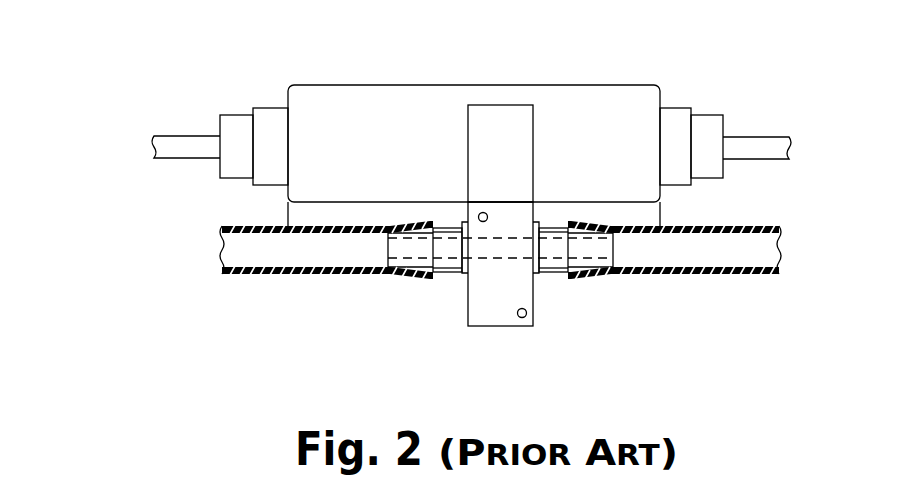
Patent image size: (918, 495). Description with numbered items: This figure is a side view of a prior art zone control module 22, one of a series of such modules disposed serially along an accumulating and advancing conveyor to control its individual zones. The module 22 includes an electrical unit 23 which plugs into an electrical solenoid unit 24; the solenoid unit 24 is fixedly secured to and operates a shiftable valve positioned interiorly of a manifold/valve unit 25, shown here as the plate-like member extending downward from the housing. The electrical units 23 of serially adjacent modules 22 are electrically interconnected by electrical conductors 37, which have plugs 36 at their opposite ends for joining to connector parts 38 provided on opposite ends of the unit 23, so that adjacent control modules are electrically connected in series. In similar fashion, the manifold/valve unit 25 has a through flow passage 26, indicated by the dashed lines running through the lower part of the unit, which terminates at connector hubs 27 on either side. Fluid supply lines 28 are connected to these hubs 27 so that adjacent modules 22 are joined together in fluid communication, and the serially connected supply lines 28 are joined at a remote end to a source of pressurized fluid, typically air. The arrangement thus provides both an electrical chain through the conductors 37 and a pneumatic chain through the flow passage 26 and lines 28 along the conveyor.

The zone control module 22 is at (474, 120).
The electrical unit 23 is at (615, 85).
The electrical solenoid unit 24 is at (518, 128).
The manifold/valve unit 25 is at (500, 313).
The through flow passage 26 is at (506, 257).
The connector hubs 27 is at (452, 266).
The fluid supply lines 28 is at (302, 273).
The plugs 36 is at (232, 122).
The electrical conductors 37 is at (168, 138).
The connector parts 38 is at (272, 122).